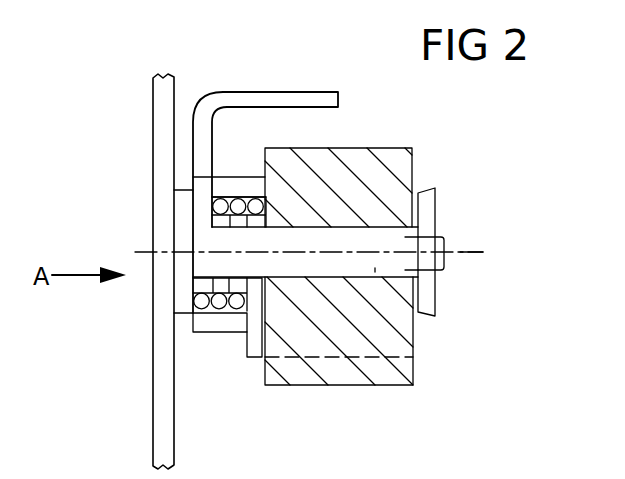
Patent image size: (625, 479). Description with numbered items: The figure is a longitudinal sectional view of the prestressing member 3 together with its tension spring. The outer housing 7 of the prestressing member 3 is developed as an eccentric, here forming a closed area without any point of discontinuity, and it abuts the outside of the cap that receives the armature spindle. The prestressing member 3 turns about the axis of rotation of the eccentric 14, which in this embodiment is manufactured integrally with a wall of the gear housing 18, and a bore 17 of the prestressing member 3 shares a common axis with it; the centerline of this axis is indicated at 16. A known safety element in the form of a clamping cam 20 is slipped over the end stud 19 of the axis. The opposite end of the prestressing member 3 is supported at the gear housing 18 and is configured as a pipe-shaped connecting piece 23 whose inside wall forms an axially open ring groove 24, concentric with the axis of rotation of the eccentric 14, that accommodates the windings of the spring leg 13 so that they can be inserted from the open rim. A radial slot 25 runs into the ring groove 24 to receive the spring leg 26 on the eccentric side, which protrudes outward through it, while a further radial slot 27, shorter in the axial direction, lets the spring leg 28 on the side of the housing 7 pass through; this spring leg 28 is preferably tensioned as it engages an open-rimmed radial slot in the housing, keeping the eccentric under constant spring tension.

The prestressing member 3 is at (398, 170).
The housing 7 is at (376, 386).
The spring leg 13 is at (220, 302).
The axis of rotation of the eccentric 14 is at (375, 270).
The axis of rotation 16 is at (468, 252).
The bore 17 is at (312, 233).
The gear housing 18 is at (163, 430).
The end stud 19 is at (431, 246).
The clamping cam 20 is at (430, 292).
The pipe-shaped connecting piece 23 is at (242, 186).
The ring groove 24 is at (253, 222).
The radial slot 25 is at (205, 327).
The spring leg 26 is at (258, 347).
The radial slot 27 is at (213, 189).
The spring leg 28 is at (260, 98).